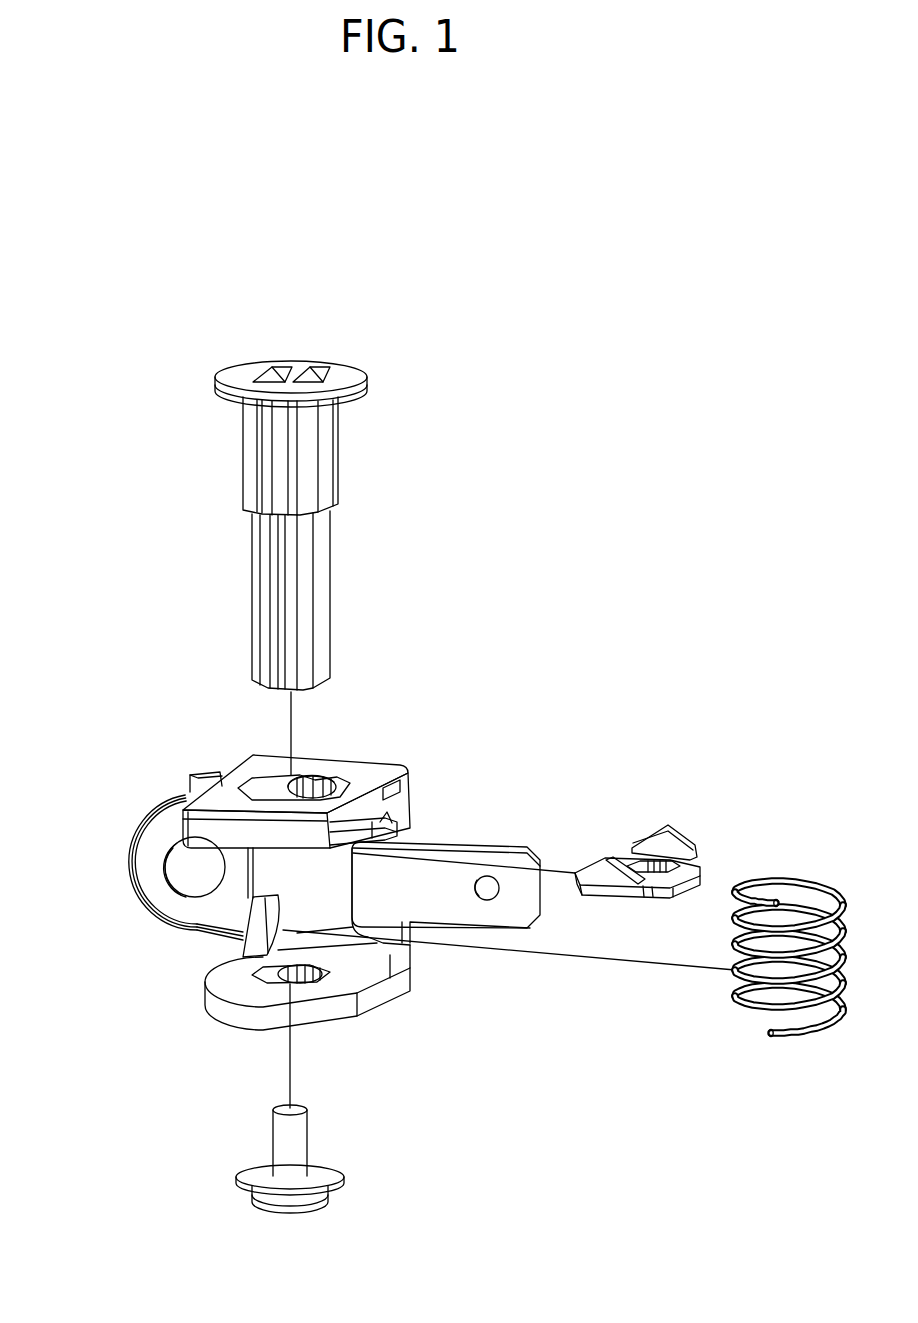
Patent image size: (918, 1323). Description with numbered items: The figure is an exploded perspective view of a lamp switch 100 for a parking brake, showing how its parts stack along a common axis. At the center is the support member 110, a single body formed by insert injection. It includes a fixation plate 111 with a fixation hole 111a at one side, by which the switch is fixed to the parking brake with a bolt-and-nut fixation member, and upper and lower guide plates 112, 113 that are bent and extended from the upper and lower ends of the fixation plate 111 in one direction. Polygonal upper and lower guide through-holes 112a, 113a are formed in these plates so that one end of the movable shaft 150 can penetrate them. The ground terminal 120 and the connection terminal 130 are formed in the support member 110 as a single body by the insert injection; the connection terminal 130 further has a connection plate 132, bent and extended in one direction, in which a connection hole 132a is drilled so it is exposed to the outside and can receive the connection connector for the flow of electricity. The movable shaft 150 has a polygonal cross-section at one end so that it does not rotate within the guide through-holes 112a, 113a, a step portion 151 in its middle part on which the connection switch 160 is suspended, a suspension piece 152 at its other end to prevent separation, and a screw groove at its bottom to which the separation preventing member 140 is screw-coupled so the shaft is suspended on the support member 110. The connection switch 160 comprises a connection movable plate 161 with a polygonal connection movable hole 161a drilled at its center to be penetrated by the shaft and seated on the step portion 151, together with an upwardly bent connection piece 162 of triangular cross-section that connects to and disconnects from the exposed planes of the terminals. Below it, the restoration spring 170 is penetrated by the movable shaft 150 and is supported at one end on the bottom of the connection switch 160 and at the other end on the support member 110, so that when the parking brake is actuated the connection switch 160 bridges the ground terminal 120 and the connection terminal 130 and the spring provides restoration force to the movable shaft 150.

The lamp switch for a parking brake 100 is at (480, 392).
The support member 110 is at (355, 752).
The fixation plate 111 is at (338, 917).
The fixation hole 111a is at (183, 848).
The upper guide plate 112 is at (370, 770).
The upper guide through-hole 112a is at (265, 770).
The lower guide plate 113 is at (250, 1012).
The lower guide through-hole 113a is at (292, 975).
The ground terminal 120 is at (150, 908).
The connection terminal 130 is at (455, 838).
The connection plate 132 is at (473, 918).
The connection hole 132a is at (488, 890).
The separation preventing member 140 is at (320, 1205).
The movable shaft 150 is at (337, 480).
The step portion 151 is at (252, 511).
The suspension piece 152 is at (340, 378).
The connection switch 160 is at (655, 895).
The connection movable plate 161 is at (675, 870).
The connection movable hole 161a is at (645, 870).
The clip tab 162 is at (663, 832).
The restoration spring 170 is at (778, 886).